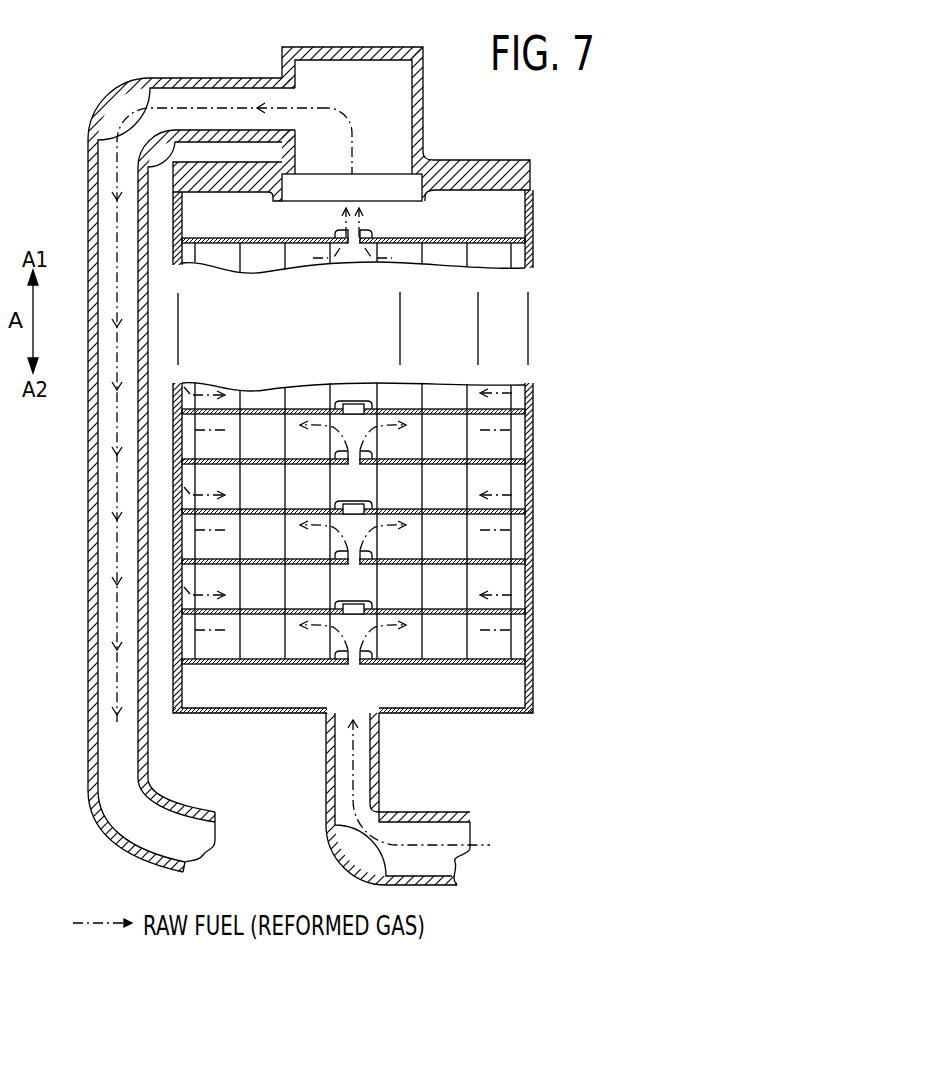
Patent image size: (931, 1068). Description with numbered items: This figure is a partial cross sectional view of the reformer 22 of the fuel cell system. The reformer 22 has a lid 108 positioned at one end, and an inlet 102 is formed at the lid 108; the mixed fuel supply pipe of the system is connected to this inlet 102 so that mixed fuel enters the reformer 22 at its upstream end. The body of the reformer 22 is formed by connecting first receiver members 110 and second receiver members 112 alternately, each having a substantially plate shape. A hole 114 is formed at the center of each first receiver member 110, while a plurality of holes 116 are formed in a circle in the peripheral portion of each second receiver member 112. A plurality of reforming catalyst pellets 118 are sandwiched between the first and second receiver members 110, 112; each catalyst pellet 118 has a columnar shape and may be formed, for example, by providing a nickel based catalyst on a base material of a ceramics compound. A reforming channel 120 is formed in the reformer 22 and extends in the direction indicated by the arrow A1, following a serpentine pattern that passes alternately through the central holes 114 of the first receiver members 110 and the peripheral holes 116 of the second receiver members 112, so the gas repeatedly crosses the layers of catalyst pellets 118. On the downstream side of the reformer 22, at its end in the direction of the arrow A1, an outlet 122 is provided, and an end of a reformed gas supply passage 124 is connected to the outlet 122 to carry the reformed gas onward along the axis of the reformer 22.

The reformer 22 is at (62, 93).
The inlet 102 is at (363, 750).
The lid 108 is at (533, 682).
The first receiver member 110 is at (532, 434).
The second receiver member 112 is at (530, 498).
The hole 114 is at (354, 664).
The holes 116 is at (530, 590).
The reforming catalyst pellets 118 is at (515, 488).
The reforming channel 120 is at (499, 386).
The outlet 122 is at (340, 100).
The reformed gas supply passage 124 is at (178, 78).